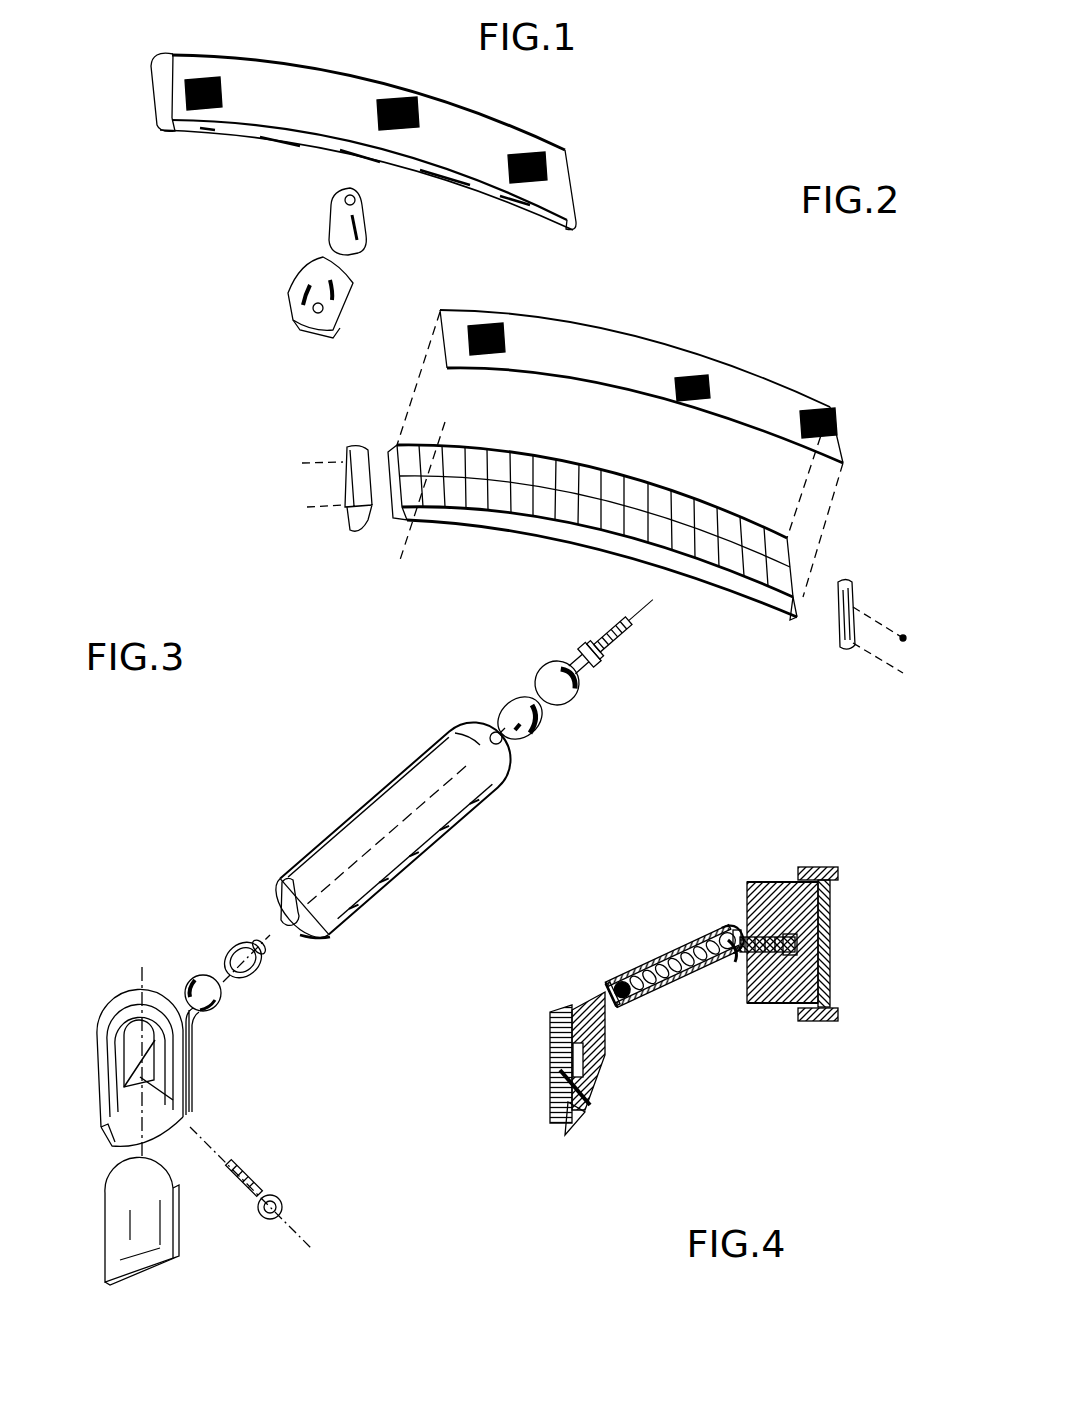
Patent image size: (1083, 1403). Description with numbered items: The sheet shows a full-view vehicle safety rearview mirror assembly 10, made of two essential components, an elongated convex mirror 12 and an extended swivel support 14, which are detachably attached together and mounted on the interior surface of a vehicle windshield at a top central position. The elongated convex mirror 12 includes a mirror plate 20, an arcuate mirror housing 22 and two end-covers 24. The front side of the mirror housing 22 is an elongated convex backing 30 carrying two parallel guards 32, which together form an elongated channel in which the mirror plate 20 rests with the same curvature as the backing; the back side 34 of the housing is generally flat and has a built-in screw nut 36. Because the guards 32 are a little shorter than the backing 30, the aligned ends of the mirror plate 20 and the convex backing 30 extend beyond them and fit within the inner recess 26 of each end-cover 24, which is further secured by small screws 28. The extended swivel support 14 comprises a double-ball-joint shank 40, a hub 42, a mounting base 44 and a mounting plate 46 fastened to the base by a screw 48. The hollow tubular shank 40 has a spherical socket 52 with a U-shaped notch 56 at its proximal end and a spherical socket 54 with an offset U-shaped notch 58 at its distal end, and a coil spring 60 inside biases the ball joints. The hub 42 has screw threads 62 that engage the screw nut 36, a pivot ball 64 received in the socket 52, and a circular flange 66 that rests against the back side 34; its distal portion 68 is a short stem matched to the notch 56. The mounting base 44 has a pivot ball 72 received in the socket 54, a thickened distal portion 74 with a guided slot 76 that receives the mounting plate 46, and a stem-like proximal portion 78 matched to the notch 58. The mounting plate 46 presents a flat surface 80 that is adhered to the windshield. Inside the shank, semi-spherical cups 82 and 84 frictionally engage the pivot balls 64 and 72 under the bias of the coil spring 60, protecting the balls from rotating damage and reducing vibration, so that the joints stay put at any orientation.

In FIG. 1, the rearview mirror assembly 10 is at (578, 78).
In FIG. 4, the rearview mirror assembly 10 is at (767, 1150).
In FIG. 1, the elongated convex mirror 12 is at (226, 50).
In FIG. 2, the elongated convex mirror 12 is at (752, 323).
In FIG. 1, the extended swivel support 14 is at (325, 218).
In FIG. 3, the extended swivel support 14 is at (222, 788).
In FIG. 2, the mirror plate 20 is at (618, 336).
In FIG. 4, the mirror plate 20 is at (843, 931).
In FIG. 2, the mirror housing 22 is at (659, 562).
In FIG. 4, the mirror housing 22 is at (760, 882).
In FIG. 2, the end-covers 24 is at (347, 513).
In FIG. 2, the inner recess 26 is at (836, 612).
In FIG. 2, the small screws 28 is at (307, 507).
In FIG. 2, the convex backing 30 is at (582, 480).
In FIG. 4, the convex backing 30 is at (783, 900).
In FIG. 2, the parallel guards 32 is at (520, 510).
In FIG. 4, the parallel guards 32 is at (810, 867).
In FIG. 2, the back side 34 is at (477, 537).
In FIG. 4, the back side 34 is at (750, 950).
In FIG. 4, the built-in screw nut 36 is at (772, 990).
In FIG. 3, the double-ball-joint shank 40 is at (401, 884).
In FIG. 4, the double-ball-joint shank 40 is at (638, 948).
In FIG. 3, the hub 42 is at (579, 663).
In FIG. 4, the hub 42 is at (741, 957).
In FIG. 3, the mounting base 44 is at (90, 1027).
In FIG. 4, the mounting base 44 is at (607, 1070).
In FIG. 3, the mounting plate 46 is at (177, 1237).
In FIG. 4, the mounting plate 46 is at (547, 1042).
In FIG. 3, the screw 48 is at (283, 1217).
In FIG. 4, the screw 48 is at (570, 1103).
In FIG. 3, the spherical socket 52 is at (490, 740).
In FIG. 3, the spherical socket 54 is at (330, 937).
In FIG. 3, the U-shaped notch 56 is at (492, 760).
In FIG. 4, the U-shaped notch 56 is at (734, 937).
In FIG. 3, the U-shaped notch 58 is at (273, 882).
In FIG. 4, the U-shaped notch 58 is at (611, 994).
In FIG. 4, the coil spring 60 is at (674, 965).
In FIG. 3, the screw threads 62 is at (613, 634).
In FIG. 4, the screw threads 62 is at (830, 955).
In FIG. 3, the pivot ball 64 is at (557, 683).
In FIG. 4, the pivot ball 64 is at (727, 940).
In FIG. 3, the circular flange 66 is at (591, 653).
In FIG. 4, the circular flange 66 is at (735, 935).
In FIG. 3, the distal portion 68 is at (626, 622).
In FIG. 3, the pivot ball 72 is at (205, 983).
In FIG. 4, the pivot ball 72 is at (622, 989).
In FIG. 3, the thickened distal portion 74 is at (183, 1060).
In FIG. 3, the guided slot 76 is at (112, 1145).
In FIG. 3, the proximal portion 78 is at (187, 1020).
In FIG. 3, the flat surface 80 is at (133, 1227).
In FIG. 3, the semi-spherical cup 82 is at (243, 937).
In FIG. 4, the semi-spherical cup 82 is at (612, 994).
In FIG. 3, the semi-spherical cup 84 is at (512, 707).
In FIG. 4, the semi-spherical cup 84 is at (722, 950).